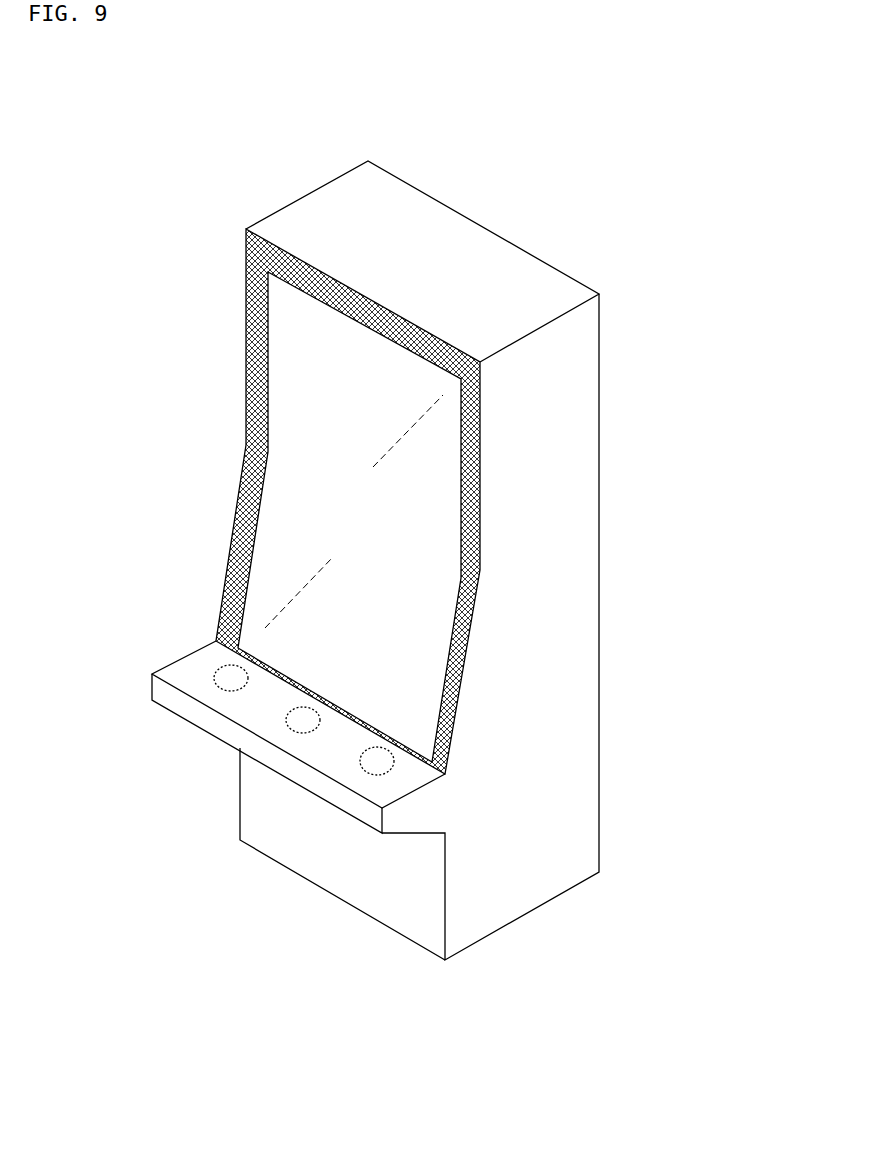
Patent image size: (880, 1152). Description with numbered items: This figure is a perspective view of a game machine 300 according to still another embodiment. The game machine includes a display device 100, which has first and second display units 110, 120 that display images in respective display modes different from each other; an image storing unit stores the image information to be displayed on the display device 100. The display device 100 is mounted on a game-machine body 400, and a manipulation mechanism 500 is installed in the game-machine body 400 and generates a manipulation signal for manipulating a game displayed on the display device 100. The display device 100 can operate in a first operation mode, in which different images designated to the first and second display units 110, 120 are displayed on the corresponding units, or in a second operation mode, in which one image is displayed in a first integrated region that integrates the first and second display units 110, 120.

The display device 300 is at (304, 150).
The game-machine body 400 is at (585, 472).
The display device 100 is at (237, 488).
The second display unit 120 is at (245, 318).
The first display unit 110 is at (292, 402).
The manipulation mechanism 500 is at (215, 673).